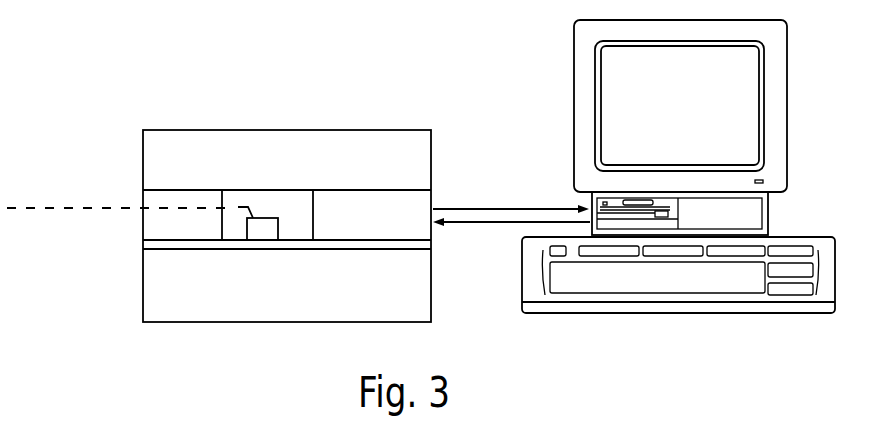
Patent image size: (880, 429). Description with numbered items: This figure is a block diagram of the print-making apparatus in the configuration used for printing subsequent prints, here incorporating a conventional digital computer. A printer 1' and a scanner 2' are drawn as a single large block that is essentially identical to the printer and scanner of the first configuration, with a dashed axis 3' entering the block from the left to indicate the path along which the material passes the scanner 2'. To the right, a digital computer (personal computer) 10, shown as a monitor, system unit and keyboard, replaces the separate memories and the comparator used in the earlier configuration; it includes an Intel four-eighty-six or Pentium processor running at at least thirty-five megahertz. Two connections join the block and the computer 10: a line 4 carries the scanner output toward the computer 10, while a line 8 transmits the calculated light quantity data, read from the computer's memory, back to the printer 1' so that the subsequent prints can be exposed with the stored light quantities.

The printer 1' is at (287, 190).
The scanner 2' is at (283, 195).
The measuring axis 3' is at (117, 170).
The signal line to computer 4 is at (507, 208).
The line 8 is at (495, 228).
The digital computer 10 is at (809, 212).